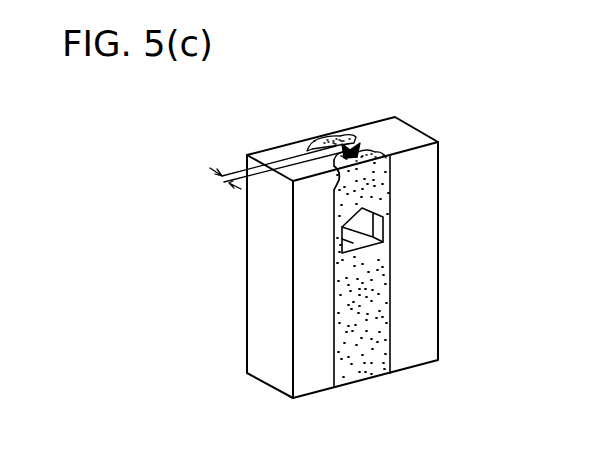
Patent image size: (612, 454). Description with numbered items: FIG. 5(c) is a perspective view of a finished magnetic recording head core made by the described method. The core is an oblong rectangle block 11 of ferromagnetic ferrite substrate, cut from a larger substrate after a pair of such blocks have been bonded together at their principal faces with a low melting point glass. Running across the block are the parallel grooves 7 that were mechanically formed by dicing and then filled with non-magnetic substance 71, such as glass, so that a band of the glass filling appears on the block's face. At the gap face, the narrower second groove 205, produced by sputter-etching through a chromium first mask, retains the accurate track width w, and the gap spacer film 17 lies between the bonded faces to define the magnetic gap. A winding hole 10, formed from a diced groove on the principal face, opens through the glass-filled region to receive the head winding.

The rectangle block 11 is at (270, 151).
The second groove 205 is at (336, 133).
The gap spacer film 17 is at (352, 143).
The non-magnetic substance 71 is at (318, 134).
The groove 7 is at (338, 175).
The winding hole 10 is at (383, 228).